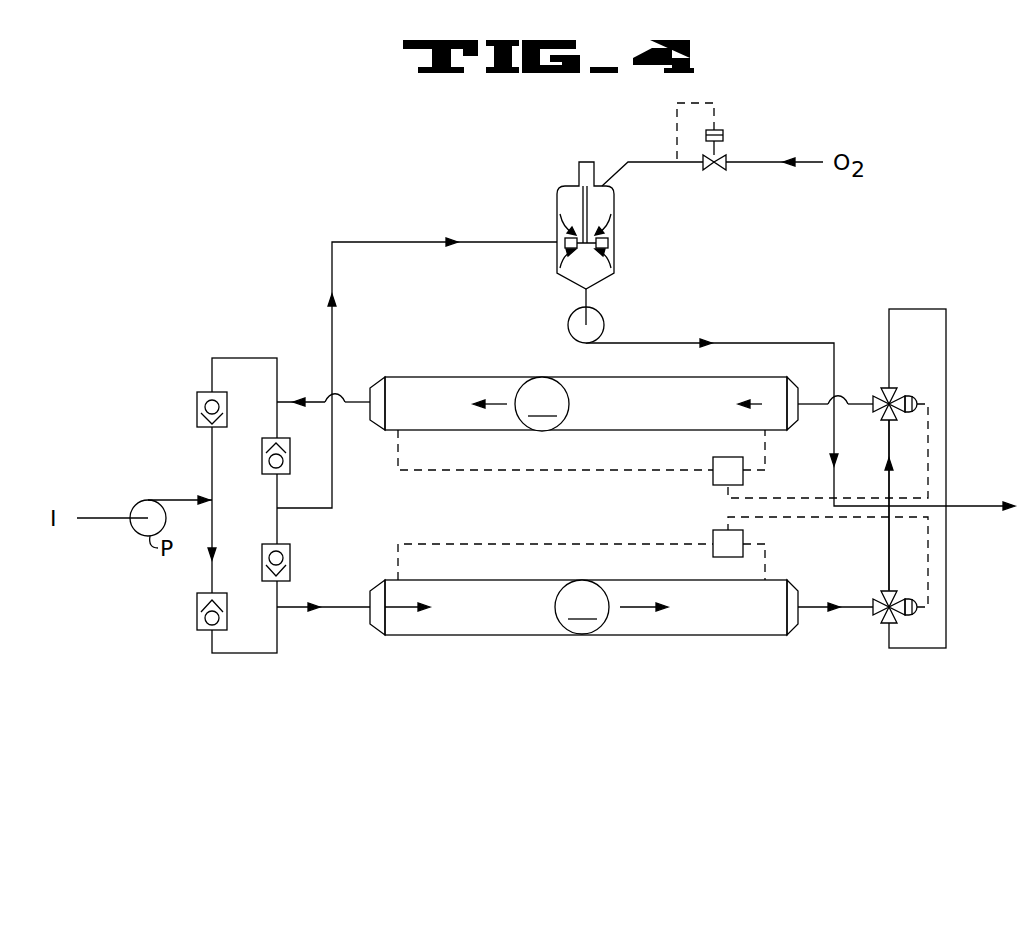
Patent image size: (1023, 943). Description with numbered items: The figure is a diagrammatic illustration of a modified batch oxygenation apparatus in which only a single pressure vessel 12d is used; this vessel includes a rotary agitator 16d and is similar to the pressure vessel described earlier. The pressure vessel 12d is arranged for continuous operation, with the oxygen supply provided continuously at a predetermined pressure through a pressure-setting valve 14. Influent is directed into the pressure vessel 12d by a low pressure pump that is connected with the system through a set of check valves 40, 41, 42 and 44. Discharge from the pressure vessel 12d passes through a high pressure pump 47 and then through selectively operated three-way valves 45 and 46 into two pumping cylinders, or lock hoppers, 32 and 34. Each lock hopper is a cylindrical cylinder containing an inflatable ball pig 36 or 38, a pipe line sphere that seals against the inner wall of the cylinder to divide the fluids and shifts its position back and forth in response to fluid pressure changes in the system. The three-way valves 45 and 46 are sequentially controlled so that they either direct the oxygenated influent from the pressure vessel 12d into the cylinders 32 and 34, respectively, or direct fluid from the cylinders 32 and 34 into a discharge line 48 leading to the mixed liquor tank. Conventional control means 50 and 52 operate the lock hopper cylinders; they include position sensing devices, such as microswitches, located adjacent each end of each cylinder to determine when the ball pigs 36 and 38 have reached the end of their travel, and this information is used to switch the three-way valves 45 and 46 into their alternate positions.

The pressure vessel 12d is at (613, 222).
The rotary agitator 16d is at (588, 204).
The pressure-setting valve 14 is at (714, 170).
The high pressure pump 47 is at (600, 320).
The pumping cylinder or lock hopper 32 is at (437, 386).
The inflatable ball pig 36 is at (542, 404).
The pumping cylinder or lock hopper 34 is at (470, 634).
The inflatable ball pig 38 is at (582, 607).
The check valve 40 is at (195, 411).
The check valve 41 is at (197, 619).
The check valve 42 is at (290, 568).
The check valve 44 is at (290, 462).
The three-way valve 45 is at (878, 395).
The three-way valve 46 is at (878, 618).
The discharge line 48 is at (975, 508).
The control means 50 is at (713, 468).
The control means 52 is at (715, 540).